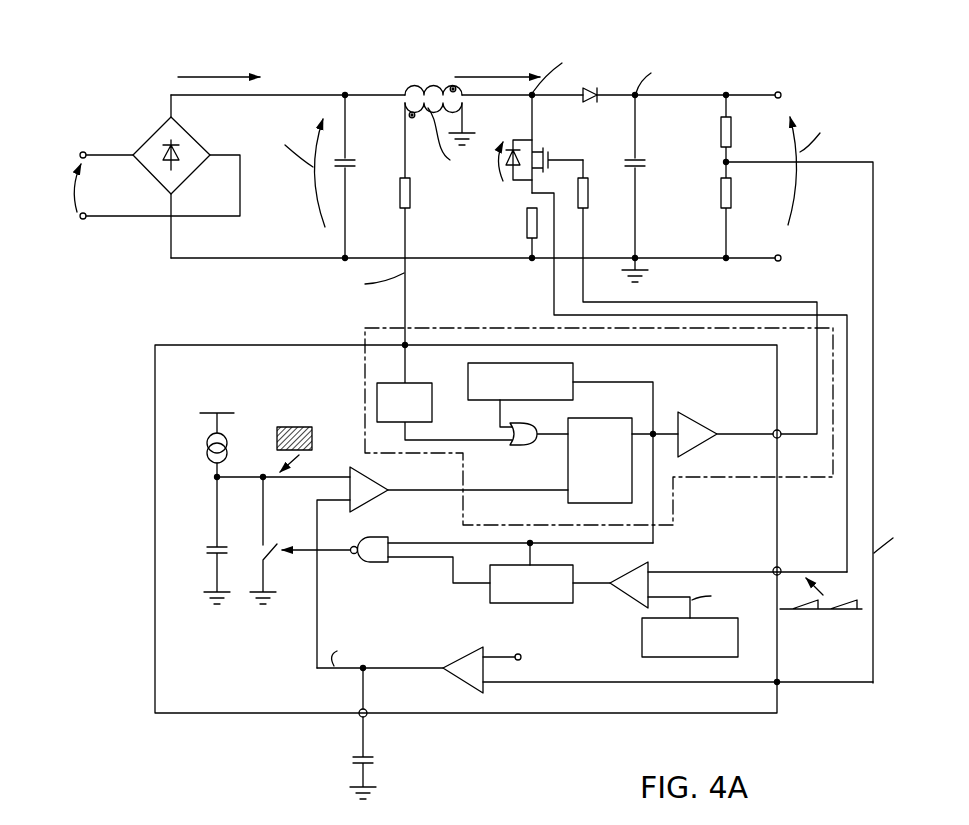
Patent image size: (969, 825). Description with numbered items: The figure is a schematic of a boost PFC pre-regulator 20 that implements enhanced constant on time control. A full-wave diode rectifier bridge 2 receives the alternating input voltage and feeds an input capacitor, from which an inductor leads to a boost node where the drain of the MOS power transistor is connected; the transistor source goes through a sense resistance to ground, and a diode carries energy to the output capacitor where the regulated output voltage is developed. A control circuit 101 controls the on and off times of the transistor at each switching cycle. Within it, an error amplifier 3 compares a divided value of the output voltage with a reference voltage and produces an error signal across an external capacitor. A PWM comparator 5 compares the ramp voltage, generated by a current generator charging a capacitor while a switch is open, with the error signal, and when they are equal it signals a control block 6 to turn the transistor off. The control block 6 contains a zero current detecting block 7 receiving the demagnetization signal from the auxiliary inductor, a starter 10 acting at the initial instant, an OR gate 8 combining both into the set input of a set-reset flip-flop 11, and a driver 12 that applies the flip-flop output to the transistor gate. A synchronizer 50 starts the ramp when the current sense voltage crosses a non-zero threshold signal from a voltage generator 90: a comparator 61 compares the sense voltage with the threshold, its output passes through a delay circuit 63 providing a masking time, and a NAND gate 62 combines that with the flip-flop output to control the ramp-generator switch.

The full-wave diode rectifier bridge 2 is at (163, 146).
The PFC pre-regulator 20 is at (461, 356).
The control circuit 101 is at (479, 540).
The control block 6 is at (585, 412).
The zero current detecting (ZCD) block 7 is at (424, 392).
The starter 10 is at (560, 447).
The set-reset flip-flop 11 is at (623, 448).
The driver 12 is at (725, 416).
The OR gate 8 is at (539, 452).
The PWM comparator 5 is at (442, 564).
The synchronizer 50 is at (572, 595).
The NAND gate 62 is at (467, 574).
The delay circuit 63 is at (547, 590).
The comparator 61 is at (721, 599).
The voltage generator 90 is at (664, 647).
The error amplifier 3 is at (595, 660).